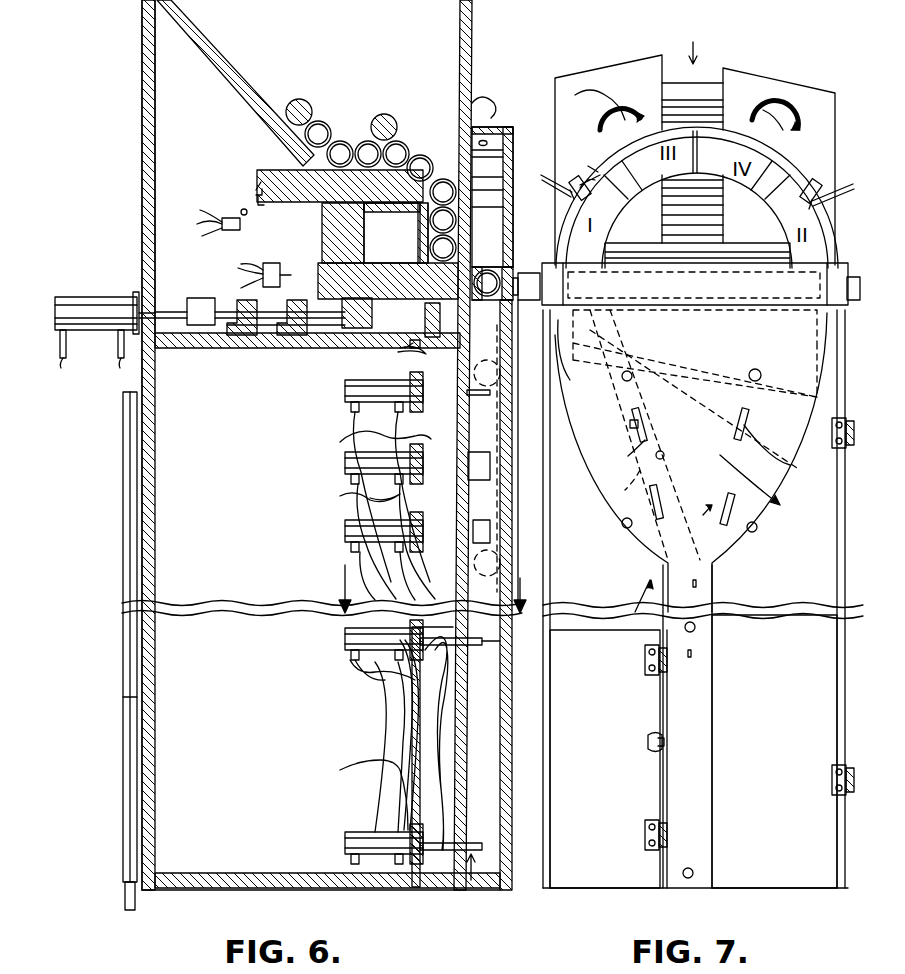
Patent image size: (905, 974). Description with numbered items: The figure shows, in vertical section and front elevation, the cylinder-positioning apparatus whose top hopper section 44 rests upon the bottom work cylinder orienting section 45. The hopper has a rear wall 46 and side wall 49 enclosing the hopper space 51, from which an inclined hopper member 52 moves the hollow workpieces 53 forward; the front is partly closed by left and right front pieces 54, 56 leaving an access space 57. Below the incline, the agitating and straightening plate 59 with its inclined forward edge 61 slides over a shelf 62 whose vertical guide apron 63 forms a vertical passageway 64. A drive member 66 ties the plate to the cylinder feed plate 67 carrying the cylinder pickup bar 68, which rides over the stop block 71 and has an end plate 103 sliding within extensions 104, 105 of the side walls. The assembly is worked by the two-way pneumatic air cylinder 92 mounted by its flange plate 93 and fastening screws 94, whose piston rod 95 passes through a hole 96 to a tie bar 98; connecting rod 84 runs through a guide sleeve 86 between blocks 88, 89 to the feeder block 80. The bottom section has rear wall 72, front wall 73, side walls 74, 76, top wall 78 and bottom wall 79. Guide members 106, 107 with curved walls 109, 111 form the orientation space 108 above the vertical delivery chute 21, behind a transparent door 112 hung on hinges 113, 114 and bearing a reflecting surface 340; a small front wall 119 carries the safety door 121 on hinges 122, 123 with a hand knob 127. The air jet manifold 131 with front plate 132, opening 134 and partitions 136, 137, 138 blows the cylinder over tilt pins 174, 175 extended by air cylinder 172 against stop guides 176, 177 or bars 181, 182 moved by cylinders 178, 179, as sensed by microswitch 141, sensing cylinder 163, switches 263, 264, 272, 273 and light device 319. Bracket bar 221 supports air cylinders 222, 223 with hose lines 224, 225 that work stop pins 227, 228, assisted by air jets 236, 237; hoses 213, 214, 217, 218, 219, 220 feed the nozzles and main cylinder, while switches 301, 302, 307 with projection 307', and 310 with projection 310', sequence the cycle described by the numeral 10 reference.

In FIG. 6, the section line 10 is at (427, 602).
In FIG. 6, the vertical delivery chute 21 is at (472, 886).
In FIG. 7, the vertical delivery chute 21 is at (695, 708).
In FIG. 6, the top hopper section 44 is at (134, 136).
In FIG. 6, the bottom work cylinder orienting section 45 is at (204, 899).
In FIG. 7, the bottom work cylinder orienting section 45 is at (756, 897).
In FIG. 6, the rear wall 46 is at (140, 182).
In FIG. 6, the side wall 49 is at (142, 92).
In FIG. 6, the hopper space 51 is at (288, 40).
In FIG. 6, the inclined hopper member 52 is at (220, 60).
In FIG. 6, the hollow cylinders or workpieces 53 is at (333, 135).
In FIG. 7, the hollow cylinders or workpieces 53 is at (703, 92).
In FIG. 7, the left front piece 54 is at (620, 75).
In FIG. 6, the right front piece 56 is at (472, 55).
In FIG. 7, the right front piece 56 is at (772, 92).
In FIG. 7, the access space 57 is at (696, 41).
In FIG. 6, the agitating and straightening plate 59 is at (258, 182).
In FIG. 6, the inclined forward edge 61 is at (428, 200).
In FIG. 6, the shelf 62 is at (378, 212).
In FIG. 6, the vertical guide apron 63 is at (419, 235).
In FIG. 6, the vertical passageway 64 is at (480, 220).
In FIG. 6, the drive member 66 is at (330, 222).
In FIG. 6, the cylinder feed plate 67 is at (328, 272).
In FIG. 6, the cylinder pickup bar 68 is at (513, 268).
In FIG. 7, the cylinder pickup bar 68 is at (712, 302).
In FIG. 6, the stop block 71 is at (425, 325).
In FIG. 6, the rear wall 72 is at (123, 490).
In FIG. 6, the front wall 73 is at (460, 884).
In FIG. 7, the side wall 74 is at (545, 888).
In FIG. 6, the side wall 76 is at (248, 860).
In FIG. 7, the side wall 76 is at (843, 888).
In FIG. 6, the top wall 78 is at (210, 348).
In FIG. 6, the bottom wall 79 is at (318, 885).
In FIG. 6, the feeder block 80 is at (368, 320).
In FIG. 6, the connecting rod 84 is at (325, 350).
In FIG. 6, the guide sleeve 86 is at (275, 350).
In FIG. 6, the transversely extending block 88 is at (245, 350).
In FIG. 6, the transversely extending block 89 is at (300, 350).
In FIG. 6, the two-way pneumatic air cylinder 92 is at (94, 307).
In FIG. 6, the flange plate 93 is at (140, 296).
In FIG. 6, the fastening screws 94 is at (133, 312).
In FIG. 6, the piston rod 95 is at (180, 333).
In FIG. 6, the hole 96 is at (160, 312).
In FIG. 6, the tie bar 98 is at (204, 306).
In FIG. 6, the end plate 103 is at (522, 273).
In FIG. 7, the projected extension 104 is at (568, 370).
In FIG. 6, the bottom extension 105 is at (500, 340).
In FIG. 7, the bottom extension 105 is at (830, 345).
In FIG. 7, the guide member 106 is at (608, 870).
In FIG. 7, the guide member 107 is at (805, 868).
In FIG. 7, the orientation space 108 is at (719, 462).
In FIG. 7, the curved side wall 109 is at (624, 527).
In FIG. 7, the curved side wall 111 is at (757, 532).
In FIG. 6, the transparent door 112 is at (512, 875).
In FIG. 7, the transparent door 112 is at (792, 758).
In FIG. 7, the hinge 113 is at (840, 450).
In FIG. 7, the hinge 114 is at (832, 785).
In FIG. 7, the small front wall 119 is at (612, 723).
In FIG. 7, the small bottom safety side door 121 is at (660, 775).
In FIG. 7, the hinge 122 is at (645, 660).
In FIG. 7, the hinge 123 is at (645, 830).
In FIG. 7, the hand knob 127 is at (646, 742).
In FIG. 6, the air jet manifold 131 is at (495, 128).
In FIG. 7, the air jet manifold 131 is at (774, 140).
In FIG. 6, the front plate 132 is at (512, 142).
In FIG. 7, the central half circular opening 134 is at (582, 200).
In FIG. 7, the partition 136 is at (638, 165).
In FIG. 7, the partition 137 is at (640, 128).
In FIG. 7, the partition 138 is at (812, 182).
In FIG. 7, the microswitch 141 is at (853, 277).
In FIG. 7, the double acting air cylinder device 163 is at (545, 292).
In FIG. 6, the double acting air cylinder 172 is at (350, 390).
In FIG. 6, the tilt pin 174 is at (490, 395).
In FIG. 7, the tilt pin 174 is at (750, 378).
In FIG. 7, the tilt pin 175 is at (625, 382).
In FIG. 6, the flat stop guide 176 is at (490, 468).
In FIG. 7, the flat stop guide 176 is at (738, 420).
In FIG. 6, the flat stop guide 177 is at (490, 530).
In FIG. 7, the flat stop guide 177 is at (735, 522).
In FIG. 6, the double acting air cylinder device 178 is at (348, 462).
In FIG. 6, the double acting air cylinder device 179 is at (348, 530).
In FIG. 7, the stop guide bar 181 is at (628, 456).
In FIG. 7, the stop guide bar 182 is at (652, 500).
In FIG. 7, the hose line 213 is at (560, 180).
In FIG. 7, the hose line 214 is at (575, 92).
In FIG. 6, the hose connection 217 is at (62, 362).
In FIG. 6, the hose connection 218 is at (118, 360).
In FIG. 7, the hose line 219 is at (822, 205).
In FIG. 7, the hose line 220 is at (790, 105).
In FIG. 6, the bracket bar 221 is at (395, 735).
In FIG. 6, the upper air cylinder 222 is at (345, 640).
In FIG. 6, the lower air cylinder 223 is at (345, 848).
In FIG. 6, the hose lines 224 is at (348, 672).
In FIG. 6, the hose lines 225 is at (339, 792).
In FIG. 6, the work stop pin 227 is at (482, 644).
In FIG. 7, the work stop pin 227 is at (696, 628).
In FIG. 6, the work stop pin 228 is at (480, 852).
In FIG. 7, the work stop pin 228 is at (692, 870).
In FIG. 6, the air jet 236 is at (358, 565).
In FIG. 7, the air jet 236 is at (697, 583).
In FIG. 6, the air jet 237 is at (385, 718).
In FIG. 7, the air jet 237 is at (693, 654).
In FIG. 6, the micro-switch 263 is at (365, 440).
In FIG. 7, the micro-switch 263 is at (790, 465).
In FIG. 6, the light sensitive switch 264 is at (347, 494).
In FIG. 7, the light sensitive switch 264 is at (771, 487).
In FIG. 7, the micro-switch 272 is at (632, 425).
In FIG. 7, the light sensitive switch 273 is at (657, 460).
In FIG. 6, the load micro-switch 301 is at (400, 352).
In FIG. 6, the feed bar rear micro-switch 302 is at (268, 263).
In FIG. 6, the latch release coil micro-switch 307 is at (200, 208).
In FIG. 6, the depending projection 307' is at (230, 187).
In FIG. 6, the double pole micro-switch 310 is at (245, 155).
In FIG. 6, the upstanding projection 310' is at (236, 160).
In FIG. 6, the light beam sensitive switch device 319 is at (362, 590).
In FIG. 6, the reflecting surface 340 is at (500, 645).